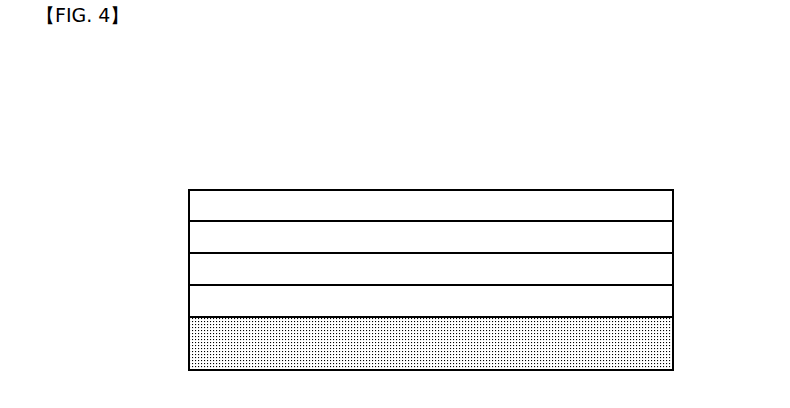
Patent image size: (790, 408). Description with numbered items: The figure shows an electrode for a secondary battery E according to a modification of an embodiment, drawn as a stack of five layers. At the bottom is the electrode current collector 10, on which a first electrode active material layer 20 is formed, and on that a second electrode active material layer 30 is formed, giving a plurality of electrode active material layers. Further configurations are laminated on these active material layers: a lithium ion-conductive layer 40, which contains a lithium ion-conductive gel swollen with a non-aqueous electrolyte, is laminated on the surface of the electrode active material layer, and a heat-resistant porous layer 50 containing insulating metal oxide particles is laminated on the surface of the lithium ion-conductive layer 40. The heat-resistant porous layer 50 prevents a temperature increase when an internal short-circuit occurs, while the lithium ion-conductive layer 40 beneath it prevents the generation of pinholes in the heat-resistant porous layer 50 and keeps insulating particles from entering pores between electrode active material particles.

The electrode current collector 10 is at (189, 341).
The first electrode active material layer 20 is at (189, 301).
The second electrode active material layer 30 is at (189, 268).
The lithium ion-conductive layer 40 is at (189, 235).
The heat-resistant porous layer 50 is at (189, 201).
The electrode for a secondary battery E is at (596, 140).